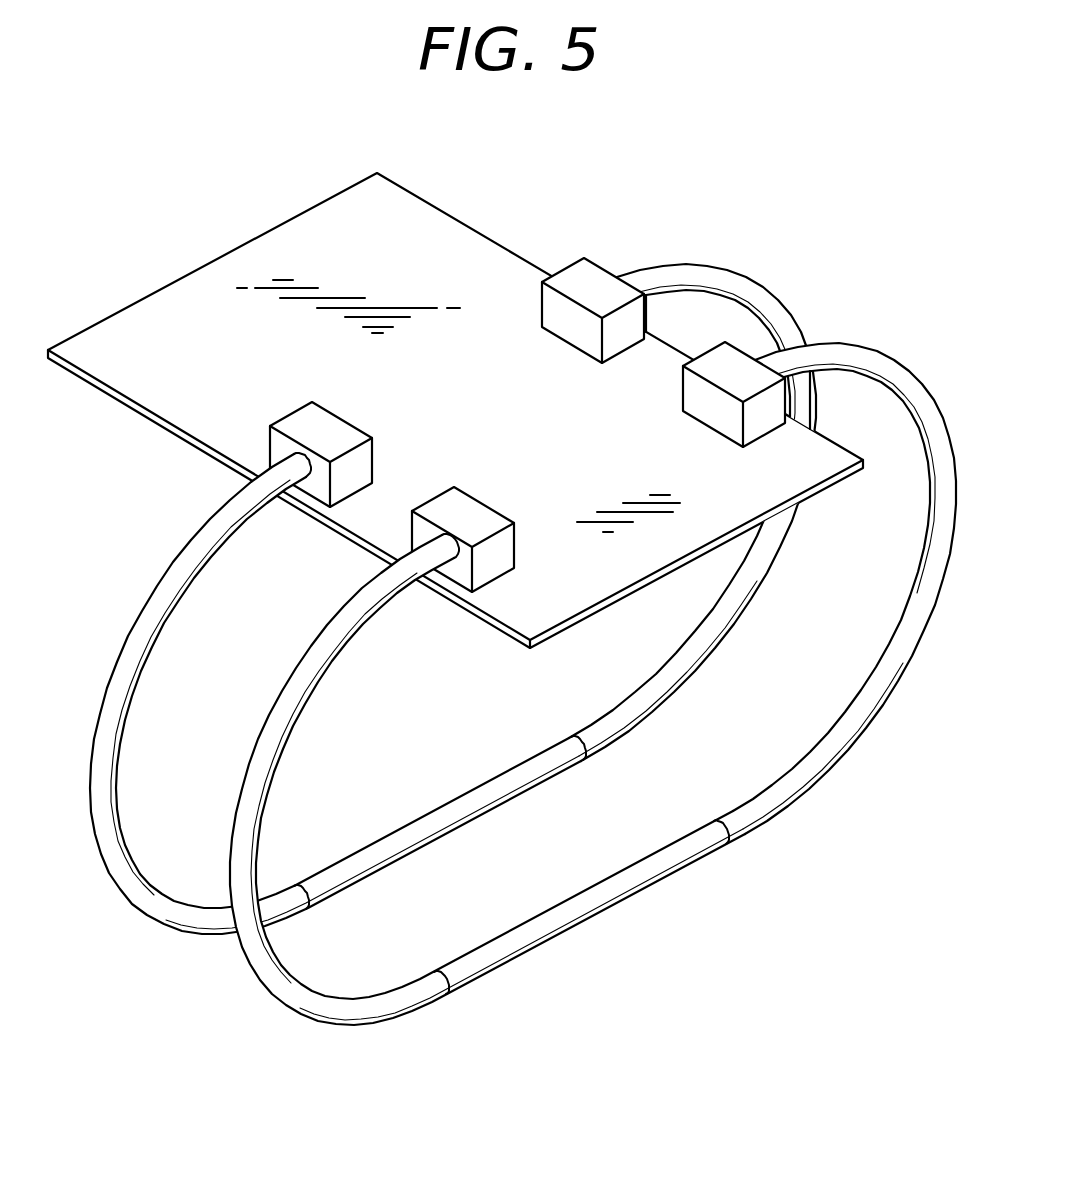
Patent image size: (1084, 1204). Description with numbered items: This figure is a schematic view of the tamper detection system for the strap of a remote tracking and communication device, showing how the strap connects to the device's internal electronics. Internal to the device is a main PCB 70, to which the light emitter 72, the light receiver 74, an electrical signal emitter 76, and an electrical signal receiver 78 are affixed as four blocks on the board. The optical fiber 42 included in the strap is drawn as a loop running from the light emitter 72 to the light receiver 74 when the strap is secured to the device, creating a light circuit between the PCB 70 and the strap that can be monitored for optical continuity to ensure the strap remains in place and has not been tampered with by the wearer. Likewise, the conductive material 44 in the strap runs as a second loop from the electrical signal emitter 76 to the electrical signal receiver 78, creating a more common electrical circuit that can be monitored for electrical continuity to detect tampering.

The main PCB 70 is at (405, 214).
The light emitter 72 is at (328, 437).
The light receiver 74 is at (570, 322).
The electrical signal emitter 76 is at (466, 514).
The electrical signal receiver 78 is at (713, 405).
The optical fiber 42 is at (168, 592).
The conductive material 44 is at (337, 637).